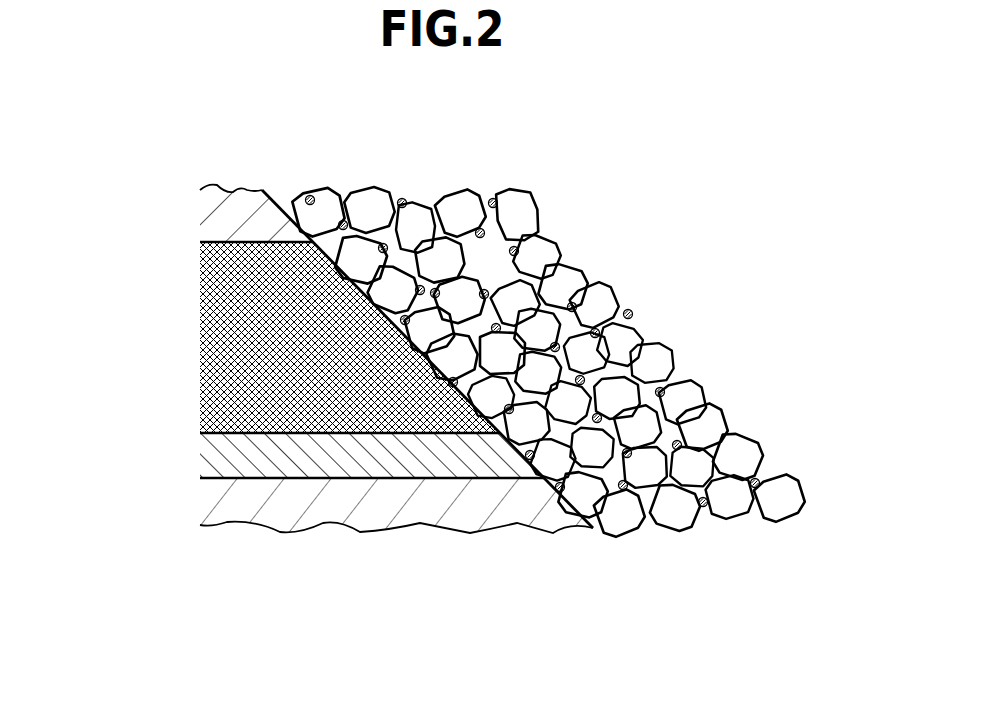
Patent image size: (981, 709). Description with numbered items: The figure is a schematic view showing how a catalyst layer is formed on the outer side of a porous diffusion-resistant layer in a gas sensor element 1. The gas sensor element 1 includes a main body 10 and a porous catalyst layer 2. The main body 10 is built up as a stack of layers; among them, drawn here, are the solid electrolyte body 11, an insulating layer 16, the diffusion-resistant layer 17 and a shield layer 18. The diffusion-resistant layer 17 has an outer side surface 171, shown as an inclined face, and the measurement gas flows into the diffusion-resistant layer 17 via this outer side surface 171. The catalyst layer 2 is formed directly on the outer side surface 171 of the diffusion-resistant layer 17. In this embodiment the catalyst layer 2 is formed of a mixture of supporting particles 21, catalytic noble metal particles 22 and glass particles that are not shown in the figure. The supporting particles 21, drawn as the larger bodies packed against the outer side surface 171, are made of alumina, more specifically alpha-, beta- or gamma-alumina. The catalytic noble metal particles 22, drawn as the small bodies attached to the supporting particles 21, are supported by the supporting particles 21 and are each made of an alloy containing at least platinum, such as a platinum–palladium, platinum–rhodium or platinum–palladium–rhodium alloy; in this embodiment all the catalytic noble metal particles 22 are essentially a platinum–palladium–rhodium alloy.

The gas sensor element 1 is at (698, 167).
The catalyst layer 2 is at (697, 533).
The main body 10 is at (260, 292).
The solid electrolyte body 11 is at (232, 505).
The insulating layer 16 is at (260, 458).
The diffusion-resistant layer 17 is at (260, 365).
The outer side surface 171 is at (372, 297).
The shield layer 18 is at (243, 222).
The supporting particles 21 is at (542, 255).
The catalytic noble metal particles 22 is at (486, 288).